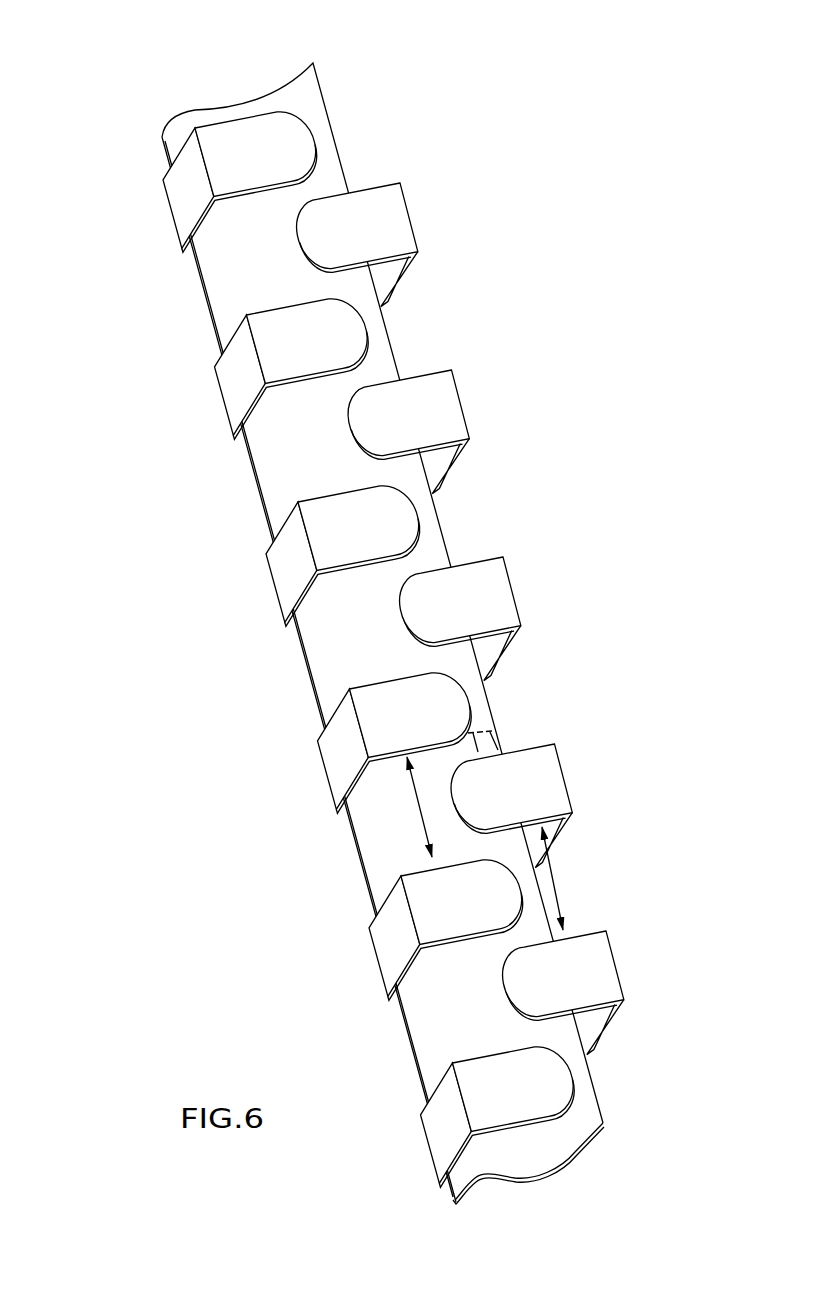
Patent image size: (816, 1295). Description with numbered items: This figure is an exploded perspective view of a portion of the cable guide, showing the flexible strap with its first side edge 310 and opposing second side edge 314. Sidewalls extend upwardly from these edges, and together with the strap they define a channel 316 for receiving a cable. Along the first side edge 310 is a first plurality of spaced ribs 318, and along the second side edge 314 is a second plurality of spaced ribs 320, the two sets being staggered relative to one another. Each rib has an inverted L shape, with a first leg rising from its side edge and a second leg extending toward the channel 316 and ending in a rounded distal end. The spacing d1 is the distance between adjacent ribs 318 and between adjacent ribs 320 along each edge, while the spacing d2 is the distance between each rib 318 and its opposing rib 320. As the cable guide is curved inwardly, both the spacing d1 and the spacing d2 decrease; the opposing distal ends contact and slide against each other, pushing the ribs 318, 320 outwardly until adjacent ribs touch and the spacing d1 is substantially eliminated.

The first side edge 310 is at (343, 160).
The second side edge 314 is at (205, 312).
The channel 316 is at (530, 1133).
The first plurality of spaced ribs 318 is at (515, 555).
The second plurality of spaced ribs 320 is at (323, 748).
The spacing between adjacent ribs d1 is at (418, 815).
The spacing between opposing ribs d2 is at (503, 741).